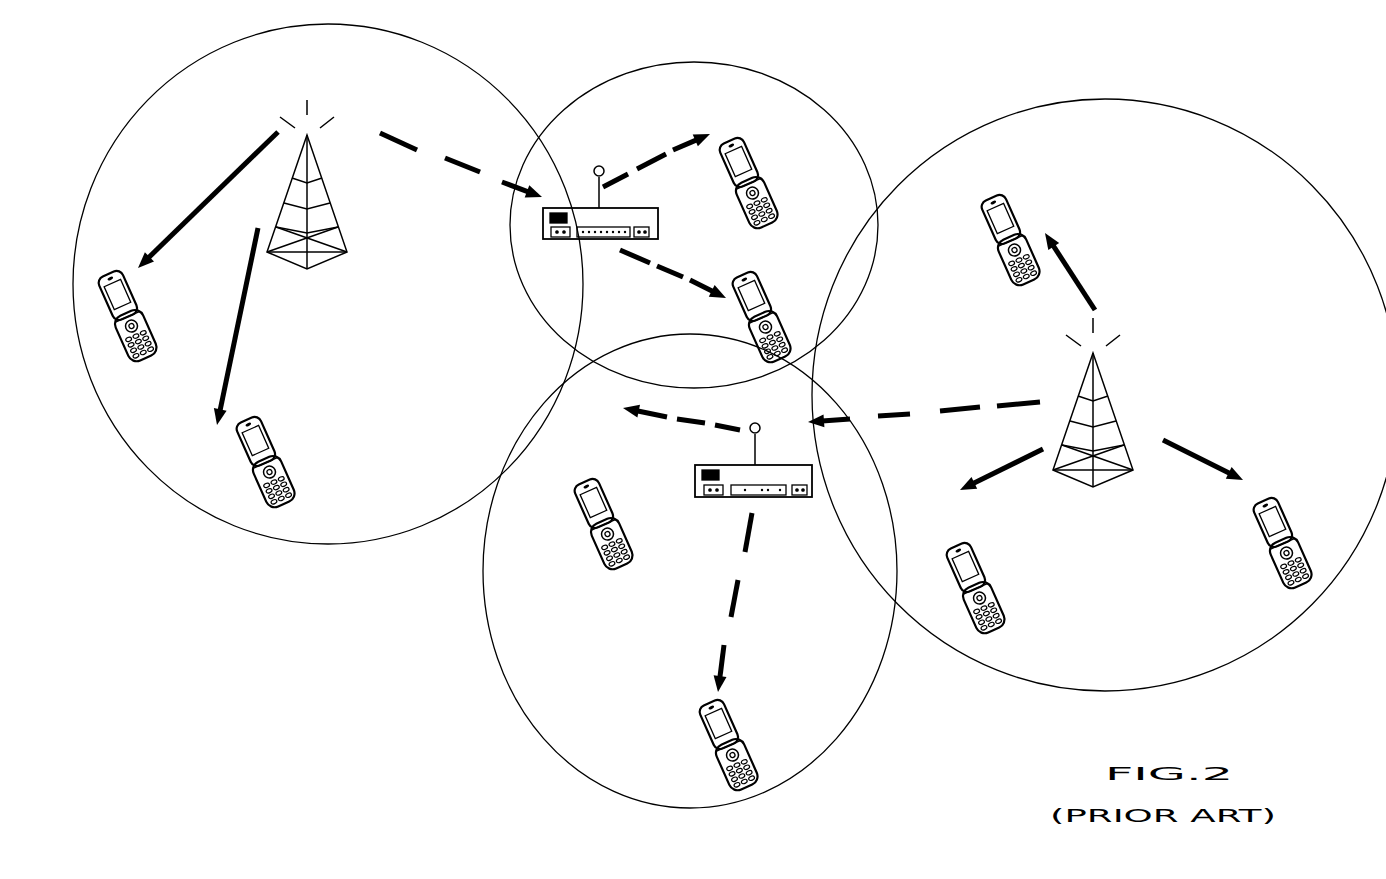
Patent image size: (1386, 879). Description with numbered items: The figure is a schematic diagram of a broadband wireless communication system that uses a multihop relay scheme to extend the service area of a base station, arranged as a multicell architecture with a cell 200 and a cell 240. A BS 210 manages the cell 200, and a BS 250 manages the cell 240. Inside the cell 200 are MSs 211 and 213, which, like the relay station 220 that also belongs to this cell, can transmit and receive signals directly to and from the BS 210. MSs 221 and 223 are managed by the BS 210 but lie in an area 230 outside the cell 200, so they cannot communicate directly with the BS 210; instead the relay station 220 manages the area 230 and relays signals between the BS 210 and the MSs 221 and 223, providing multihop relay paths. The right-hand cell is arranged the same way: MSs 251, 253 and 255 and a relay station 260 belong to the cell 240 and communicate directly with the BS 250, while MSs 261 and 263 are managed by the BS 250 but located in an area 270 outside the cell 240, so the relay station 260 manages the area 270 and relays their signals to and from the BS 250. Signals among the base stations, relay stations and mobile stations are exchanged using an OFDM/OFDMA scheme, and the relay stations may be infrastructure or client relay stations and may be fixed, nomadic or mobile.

The cell 200 is at (328, 284).
The BS 210 is at (328, 190).
The MS 211 is at (107, 270).
The MS 213 is at (243, 420).
The relay station 220 is at (565, 240).
The MS 221 is at (748, 275).
The MS 223 is at (738, 143).
The area 230 is at (694, 225).
The cell 240 is at (1099, 395).
The BS 250 is at (1112, 408).
The MS 251 is at (990, 198).
The MS 253 is at (1270, 500).
The MS 255 is at (958, 542).
The relay station 260 is at (703, 498).
The MS 261 is at (590, 484).
The MS 263 is at (718, 704).
The area 270 is at (690, 571).